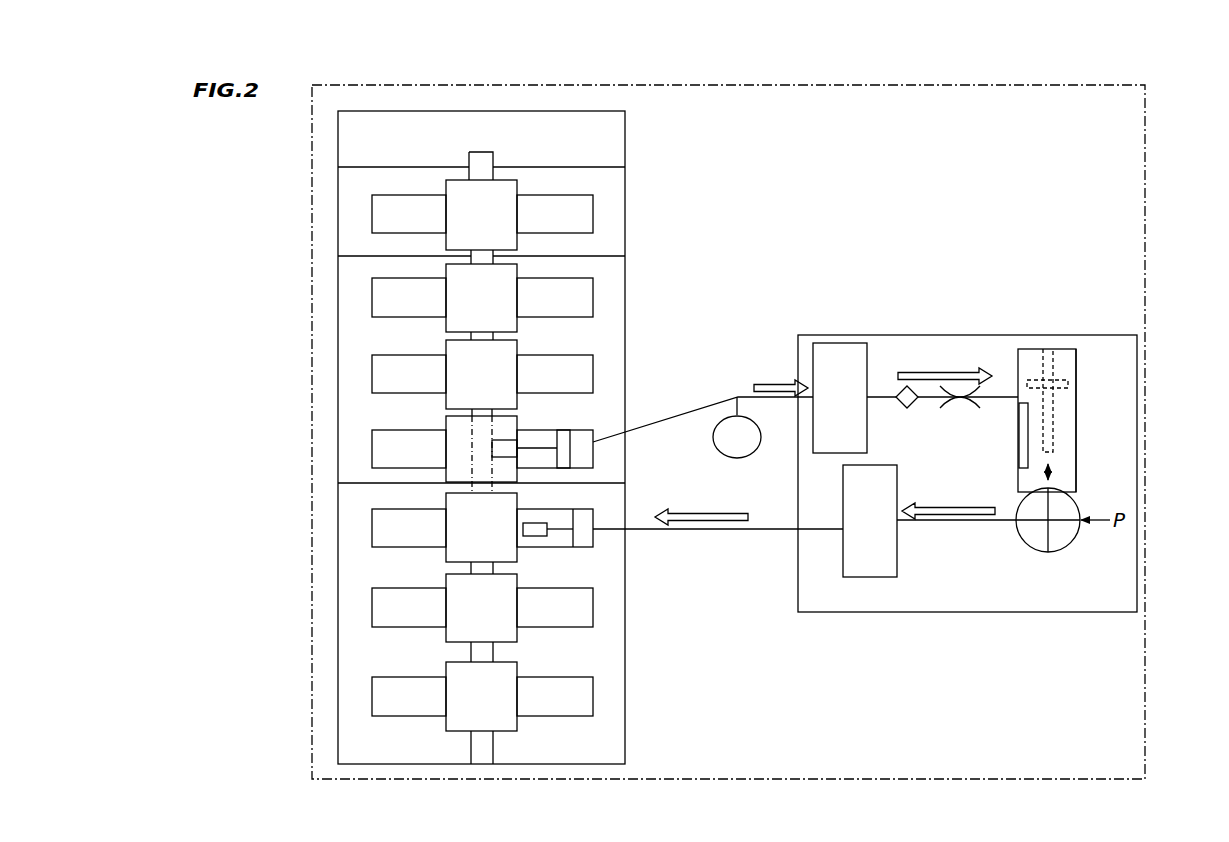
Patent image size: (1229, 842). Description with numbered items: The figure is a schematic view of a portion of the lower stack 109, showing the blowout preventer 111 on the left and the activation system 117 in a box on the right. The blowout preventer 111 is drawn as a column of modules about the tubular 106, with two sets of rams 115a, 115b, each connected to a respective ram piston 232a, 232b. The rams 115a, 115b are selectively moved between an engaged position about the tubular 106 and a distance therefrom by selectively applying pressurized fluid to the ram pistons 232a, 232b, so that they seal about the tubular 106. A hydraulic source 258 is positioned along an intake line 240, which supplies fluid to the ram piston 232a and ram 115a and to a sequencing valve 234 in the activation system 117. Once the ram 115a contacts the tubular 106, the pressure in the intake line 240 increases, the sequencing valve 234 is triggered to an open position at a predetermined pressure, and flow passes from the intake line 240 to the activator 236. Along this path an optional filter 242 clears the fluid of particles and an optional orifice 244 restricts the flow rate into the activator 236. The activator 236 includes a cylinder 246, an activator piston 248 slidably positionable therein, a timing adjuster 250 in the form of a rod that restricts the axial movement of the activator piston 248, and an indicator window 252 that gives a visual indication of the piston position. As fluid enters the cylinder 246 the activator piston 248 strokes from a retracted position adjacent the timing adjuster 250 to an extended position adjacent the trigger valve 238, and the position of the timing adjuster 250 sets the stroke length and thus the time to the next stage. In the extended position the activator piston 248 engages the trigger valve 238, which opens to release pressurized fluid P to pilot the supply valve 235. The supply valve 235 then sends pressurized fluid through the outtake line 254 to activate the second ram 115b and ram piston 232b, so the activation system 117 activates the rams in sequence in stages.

The lower stack 109 is at (1148, 102).
The blowout preventer 111 is at (370, 205).
The tubular 106 is at (493, 743).
The first set of rams 115a is at (507, 438).
The second set of rams 115b is at (543, 537).
The ram piston 232a is at (575, 452).
The ram piston 232b is at (597, 538).
The intake line 240 is at (747, 393).
The hydraulic source 258 is at (737, 427).
The outtake line 254 is at (738, 530).
The activation system 117 is at (1037, 332).
The sequencing valve 234 is at (840, 398).
The supply valve 235 is at (870, 521).
The filter 242 is at (910, 408).
The orifice 244 is at (945, 413).
The activator 236 is at (1020, 349).
The cylinder 246 is at (1077, 377).
The activator piston 248 is at (1050, 437).
The timing adjuster 250 is at (1055, 365).
The indicator window 252 is at (1018, 445).
The trigger valve 238 is at (1028, 545).